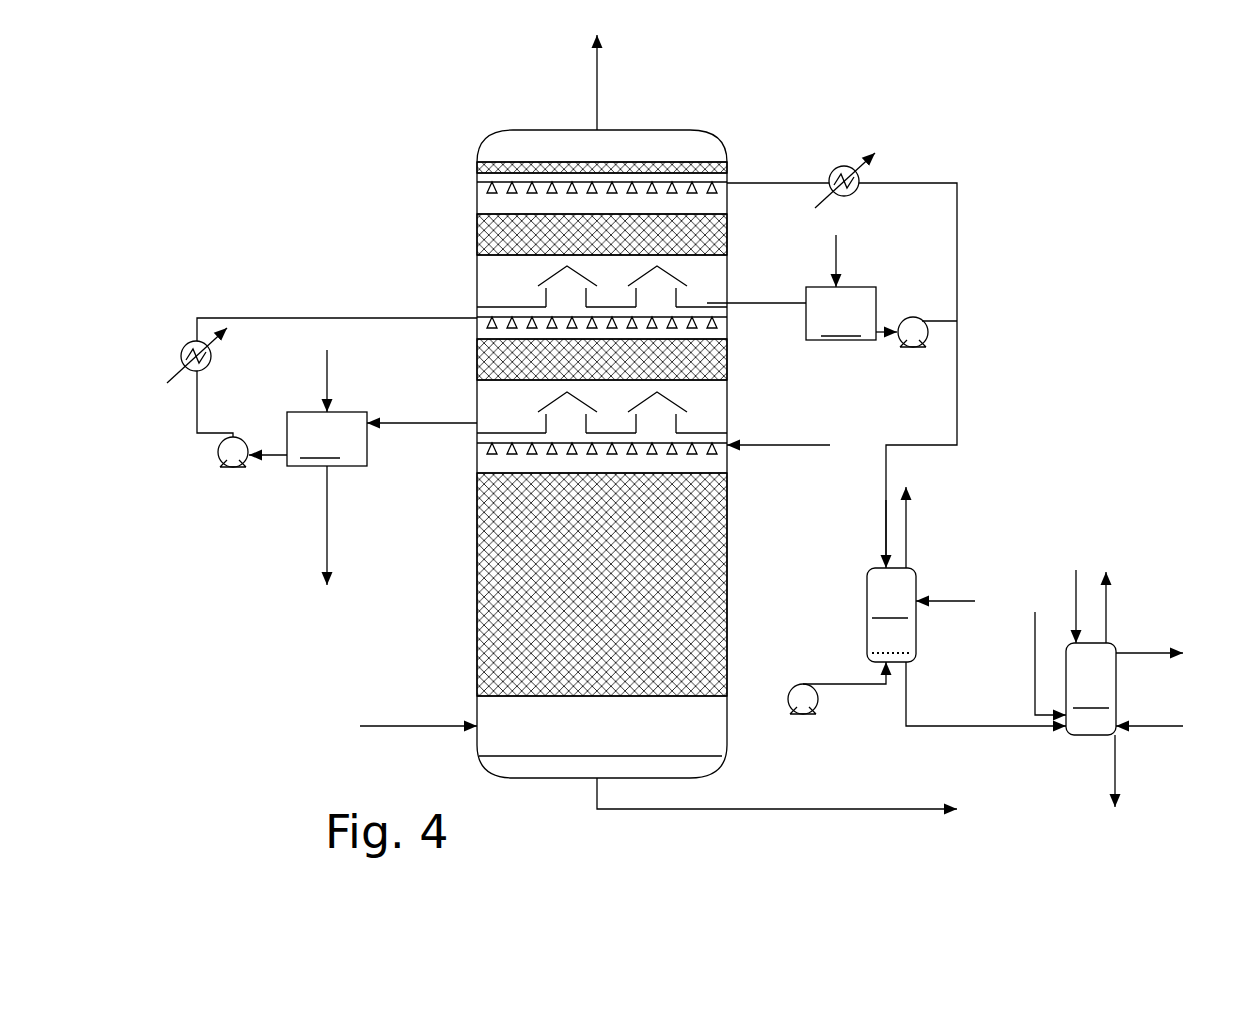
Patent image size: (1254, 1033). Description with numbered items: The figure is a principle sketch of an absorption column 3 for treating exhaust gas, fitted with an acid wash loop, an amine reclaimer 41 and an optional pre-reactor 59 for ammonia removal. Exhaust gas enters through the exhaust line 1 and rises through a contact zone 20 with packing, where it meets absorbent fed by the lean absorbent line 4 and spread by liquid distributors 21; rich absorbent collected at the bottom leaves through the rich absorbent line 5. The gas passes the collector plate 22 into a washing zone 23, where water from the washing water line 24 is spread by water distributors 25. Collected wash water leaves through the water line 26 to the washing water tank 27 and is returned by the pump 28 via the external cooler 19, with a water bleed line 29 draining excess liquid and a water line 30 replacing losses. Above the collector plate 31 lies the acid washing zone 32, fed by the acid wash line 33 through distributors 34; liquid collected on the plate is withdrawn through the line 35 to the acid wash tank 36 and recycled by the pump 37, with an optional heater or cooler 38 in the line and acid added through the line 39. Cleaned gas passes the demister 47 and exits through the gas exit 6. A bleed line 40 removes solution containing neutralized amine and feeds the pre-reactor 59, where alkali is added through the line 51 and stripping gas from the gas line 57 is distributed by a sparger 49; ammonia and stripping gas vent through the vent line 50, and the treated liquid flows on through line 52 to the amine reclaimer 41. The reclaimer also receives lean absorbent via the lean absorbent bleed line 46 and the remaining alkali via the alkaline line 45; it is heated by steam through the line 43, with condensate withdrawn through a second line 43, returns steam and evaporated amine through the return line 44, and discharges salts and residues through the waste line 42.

The exhaust line 1 is at (385, 720).
The absorption column 3 is at (503, 132).
The lean absorbent line 4 is at (787, 446).
The rich absorbent line 5 is at (837, 808).
The gas exit 6 is at (603, 70).
The external cooler 19 is at (185, 348).
The contact zone 20 is at (507, 632).
The liquid distributors 21 is at (528, 447).
The collector plate 22 is at (518, 433).
The washing zone 23 is at (725, 360).
The washing water line 24 is at (295, 318).
The water distributors 25 is at (497, 340).
The water line 26 is at (438, 423).
The washing water tank 27 is at (327, 439).
The pump 28 is at (237, 450).
The water bleed line 29 is at (327, 545).
The water line 30 is at (325, 382).
The collector plate 31 is at (505, 306).
The acid washing zone 32 is at (490, 233).
The acid wash line 33 is at (790, 143).
The distributors 34 is at (515, 185).
The line 35 is at (787, 300).
The acid wash tank 36 is at (841, 313).
The pump 37 is at (905, 330).
The heater or cooler 38 is at (837, 167).
The line 39 is at (836, 247).
The bleed line 40 is at (886, 537).
The amine reclaimer 41 is at (1091, 689).
The waste line 42 is at (1115, 770).
The line 43 is at (1185, 652).
The return line 44 is at (1106, 588).
The alkaline line 45 is at (1076, 572).
The lean absorbent bleed line 46 is at (1032, 628).
The demister 47 is at (513, 163).
The sparger 49 is at (867, 652).
The vent line 50 is at (906, 517).
The line 51 is at (930, 595).
The transfer line 52 is at (993, 672).
The gas line 57 is at (868, 684).
The pre-reactor 59 is at (891, 615).